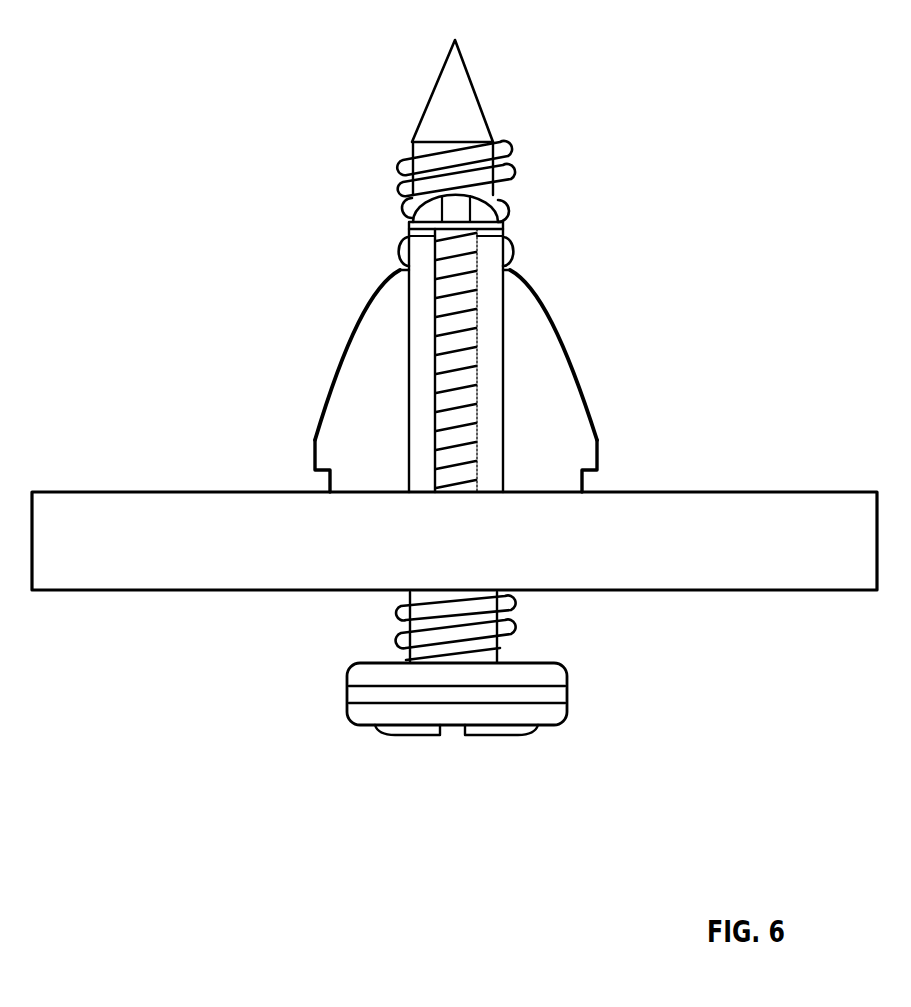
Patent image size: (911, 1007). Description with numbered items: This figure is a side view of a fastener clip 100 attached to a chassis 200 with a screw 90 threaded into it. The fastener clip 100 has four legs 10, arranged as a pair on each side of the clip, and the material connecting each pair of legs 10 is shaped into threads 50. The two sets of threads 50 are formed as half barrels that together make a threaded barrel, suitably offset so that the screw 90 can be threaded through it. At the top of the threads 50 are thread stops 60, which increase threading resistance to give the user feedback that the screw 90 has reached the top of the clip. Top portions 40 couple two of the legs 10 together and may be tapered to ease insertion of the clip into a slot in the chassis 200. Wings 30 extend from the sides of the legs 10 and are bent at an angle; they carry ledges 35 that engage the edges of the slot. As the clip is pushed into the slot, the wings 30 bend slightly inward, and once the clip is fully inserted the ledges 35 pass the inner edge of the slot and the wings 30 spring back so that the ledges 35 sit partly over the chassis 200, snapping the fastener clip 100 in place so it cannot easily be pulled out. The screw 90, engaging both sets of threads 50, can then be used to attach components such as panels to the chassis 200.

The fastener clip 100 is at (670, 75).
The screw 90 is at (457, 103).
The thread stops 60 is at (458, 206).
The top portions 40 is at (415, 207).
The threads 50 is at (518, 252).
The legs 10 is at (422, 325).
The wings 30 is at (371, 357).
The ledges 35 is at (318, 470).
The chassis 200 is at (615, 528).